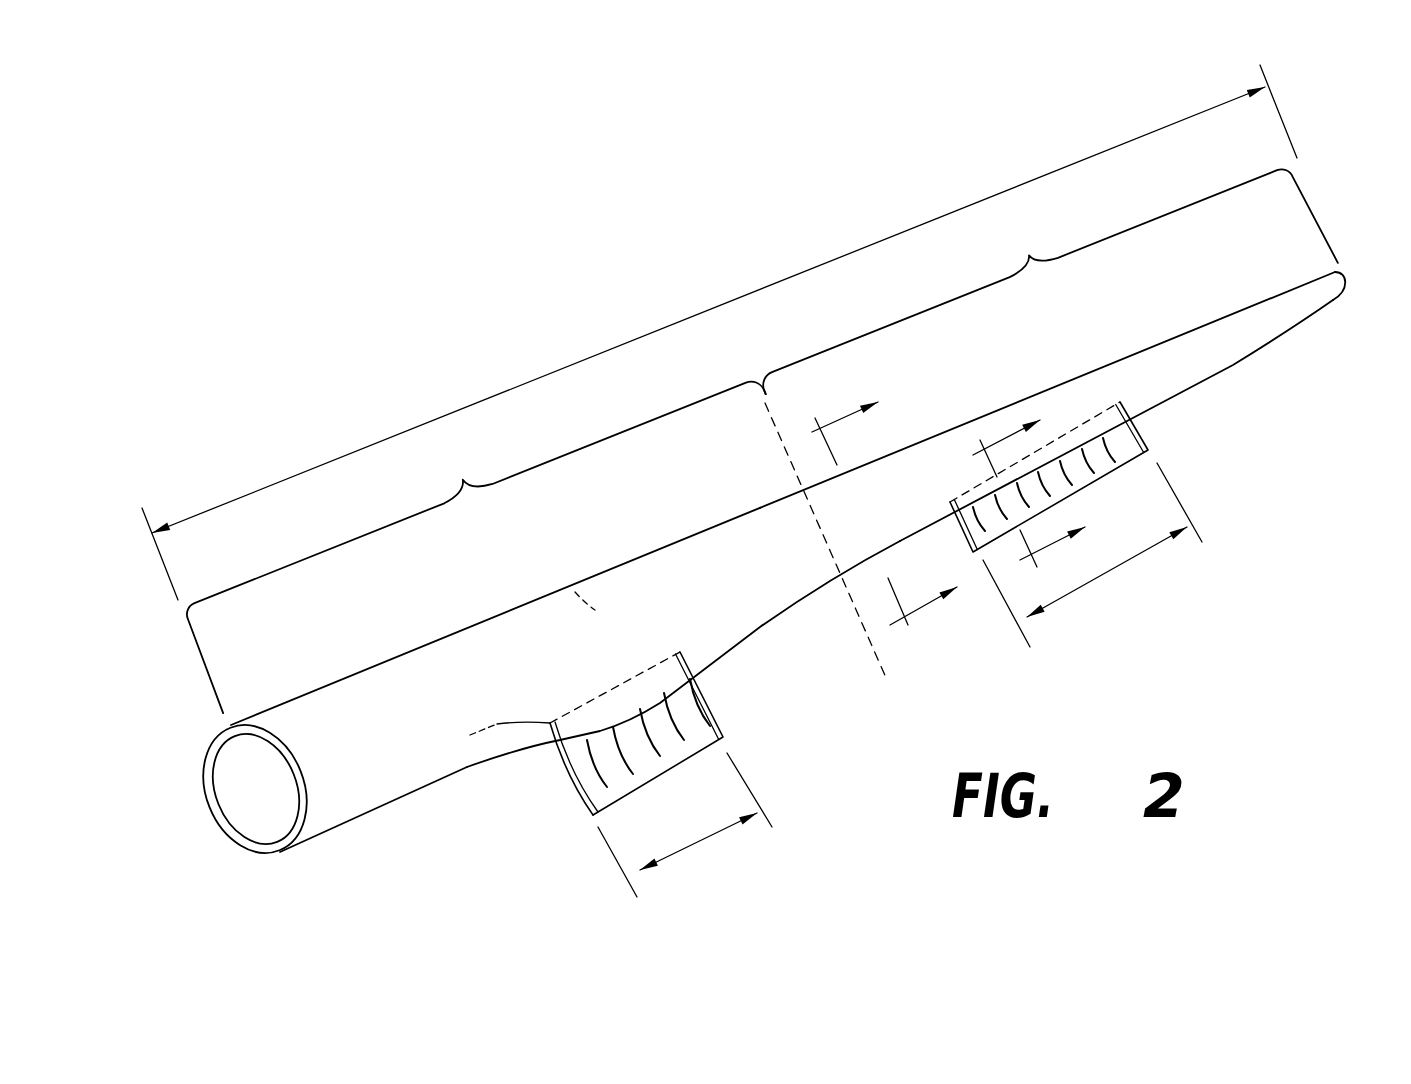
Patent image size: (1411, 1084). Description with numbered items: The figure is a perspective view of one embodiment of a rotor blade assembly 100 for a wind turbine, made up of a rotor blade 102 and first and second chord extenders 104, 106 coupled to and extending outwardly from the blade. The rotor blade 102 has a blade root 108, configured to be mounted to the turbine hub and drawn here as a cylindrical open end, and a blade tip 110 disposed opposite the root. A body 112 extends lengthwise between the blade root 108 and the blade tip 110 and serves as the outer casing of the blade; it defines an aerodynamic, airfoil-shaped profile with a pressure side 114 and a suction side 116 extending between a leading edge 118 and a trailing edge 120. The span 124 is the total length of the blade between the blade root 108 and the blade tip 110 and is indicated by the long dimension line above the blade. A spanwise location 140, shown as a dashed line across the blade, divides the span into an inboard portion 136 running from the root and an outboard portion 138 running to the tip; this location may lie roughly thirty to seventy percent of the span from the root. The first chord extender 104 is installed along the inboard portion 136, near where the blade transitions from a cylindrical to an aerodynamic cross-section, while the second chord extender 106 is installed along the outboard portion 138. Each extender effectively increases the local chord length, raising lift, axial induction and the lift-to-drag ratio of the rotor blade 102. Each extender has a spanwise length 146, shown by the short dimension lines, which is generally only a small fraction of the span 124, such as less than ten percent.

The rotor blade assembly 100 is at (448, 300).
The rotor blade 102 is at (504, 778).
The first chord extender 104 is at (698, 760).
The second chord extender 106 is at (1110, 473).
The blade root 108 is at (273, 855).
The blade tip 110 is at (1347, 280).
The body 112 is at (515, 647).
The pressure side 114 is at (568, 582).
The suction side 116 is at (720, 560).
The leading edge 118 is at (1150, 343).
The trailing edge 120 is at (760, 630).
The span 124 is at (800, 272).
The inboard portion 136 is at (488, 538).
The outboard portion 138 is at (1046, 314).
The spanwise location 140 is at (878, 658).
The spanwise length 146 is at (703, 837).